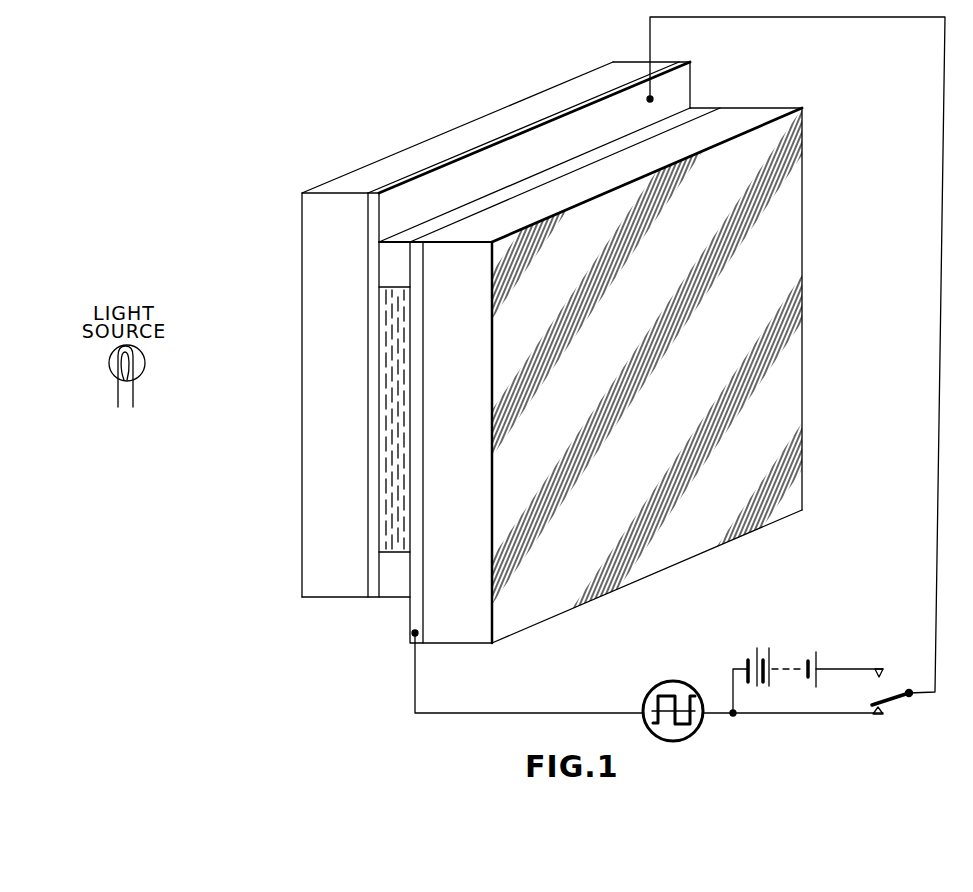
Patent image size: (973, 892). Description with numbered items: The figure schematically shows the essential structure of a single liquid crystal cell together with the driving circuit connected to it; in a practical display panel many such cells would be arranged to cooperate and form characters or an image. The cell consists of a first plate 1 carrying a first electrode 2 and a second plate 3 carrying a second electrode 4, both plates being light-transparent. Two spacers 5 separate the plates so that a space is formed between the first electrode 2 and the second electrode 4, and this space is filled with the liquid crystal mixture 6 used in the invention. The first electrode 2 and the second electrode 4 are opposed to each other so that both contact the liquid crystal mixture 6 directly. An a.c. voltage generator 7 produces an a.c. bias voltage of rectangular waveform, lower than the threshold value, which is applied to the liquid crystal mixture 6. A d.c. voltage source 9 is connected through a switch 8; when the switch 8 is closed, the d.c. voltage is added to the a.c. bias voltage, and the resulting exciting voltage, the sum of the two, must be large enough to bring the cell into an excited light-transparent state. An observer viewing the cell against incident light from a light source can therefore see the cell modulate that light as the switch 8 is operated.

The first plate 1 is at (725, 104).
The first electrode 2 is at (417, 343).
The second plate 3 is at (693, 54).
The second electrode 4 is at (373, 261).
The spacers 5 is at (398, 266).
The liquid crystal mixture 6 is at (390, 498).
The a.c. voltage generator 7 is at (683, 673).
The switch 8 is at (893, 690).
The d.c. voltage source 9 is at (777, 655).